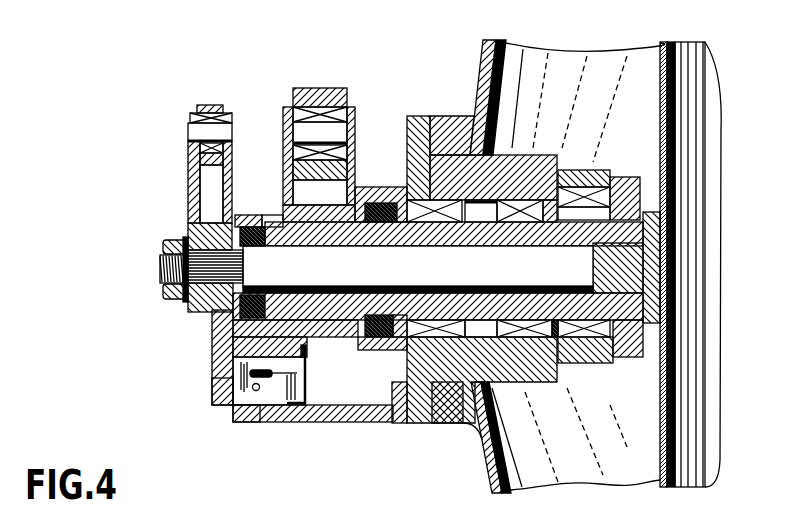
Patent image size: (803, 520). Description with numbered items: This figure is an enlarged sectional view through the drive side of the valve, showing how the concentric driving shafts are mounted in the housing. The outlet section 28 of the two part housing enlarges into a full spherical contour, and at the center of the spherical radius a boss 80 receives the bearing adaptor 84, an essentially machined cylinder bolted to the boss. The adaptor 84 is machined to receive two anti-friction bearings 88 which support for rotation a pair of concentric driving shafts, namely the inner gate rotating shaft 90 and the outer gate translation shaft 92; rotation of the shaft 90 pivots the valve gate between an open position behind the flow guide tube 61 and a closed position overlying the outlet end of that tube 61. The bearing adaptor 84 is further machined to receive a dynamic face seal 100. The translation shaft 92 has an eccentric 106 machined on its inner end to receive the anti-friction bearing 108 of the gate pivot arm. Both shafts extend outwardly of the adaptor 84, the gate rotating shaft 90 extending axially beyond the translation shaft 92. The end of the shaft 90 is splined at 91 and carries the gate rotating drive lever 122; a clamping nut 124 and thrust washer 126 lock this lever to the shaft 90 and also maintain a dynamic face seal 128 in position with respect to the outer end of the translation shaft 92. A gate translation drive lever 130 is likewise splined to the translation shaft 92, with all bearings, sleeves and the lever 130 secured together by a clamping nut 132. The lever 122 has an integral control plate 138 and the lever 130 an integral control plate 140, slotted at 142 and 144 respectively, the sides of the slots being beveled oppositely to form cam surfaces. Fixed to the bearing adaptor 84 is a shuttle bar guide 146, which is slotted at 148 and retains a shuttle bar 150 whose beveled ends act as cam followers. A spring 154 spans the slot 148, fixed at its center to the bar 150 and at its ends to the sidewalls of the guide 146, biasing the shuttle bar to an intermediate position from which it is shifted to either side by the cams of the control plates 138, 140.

The outlet section 28 is at (496, 48).
The flow guide tube 61 is at (668, 171).
The boss 80 is at (453, 115).
The bearing adaptor 84 is at (517, 155).
The anti-friction bearings 88 is at (503, 312).
The gate rotating shaft 90 is at (402, 266).
The spline 91 is at (186, 300).
The gate translation shaft 92 is at (542, 200).
The dynamic face seal 100 is at (385, 203).
The eccentric 106 is at (641, 212).
The anti-friction bearing 108 is at (585, 340).
The gate rotating drive lever 122 is at (188, 183).
The clamping nut 124 is at (165, 247).
The thrust washer 126 is at (184, 237).
The dynamic face seal 128 is at (215, 321).
The gate translation drive lever 130 is at (278, 210).
The clamping nut 132 is at (276, 214).
The control plate 138 is at (232, 407).
The control plate 140 is at (306, 391).
The slot 142 is at (220, 378).
The slot 144 is at (316, 349).
The shuttle bar guide 146 is at (287, 411).
The slot 148 is at (256, 391).
The shuttle bar 150 is at (243, 358).
The spring 154 is at (298, 373).